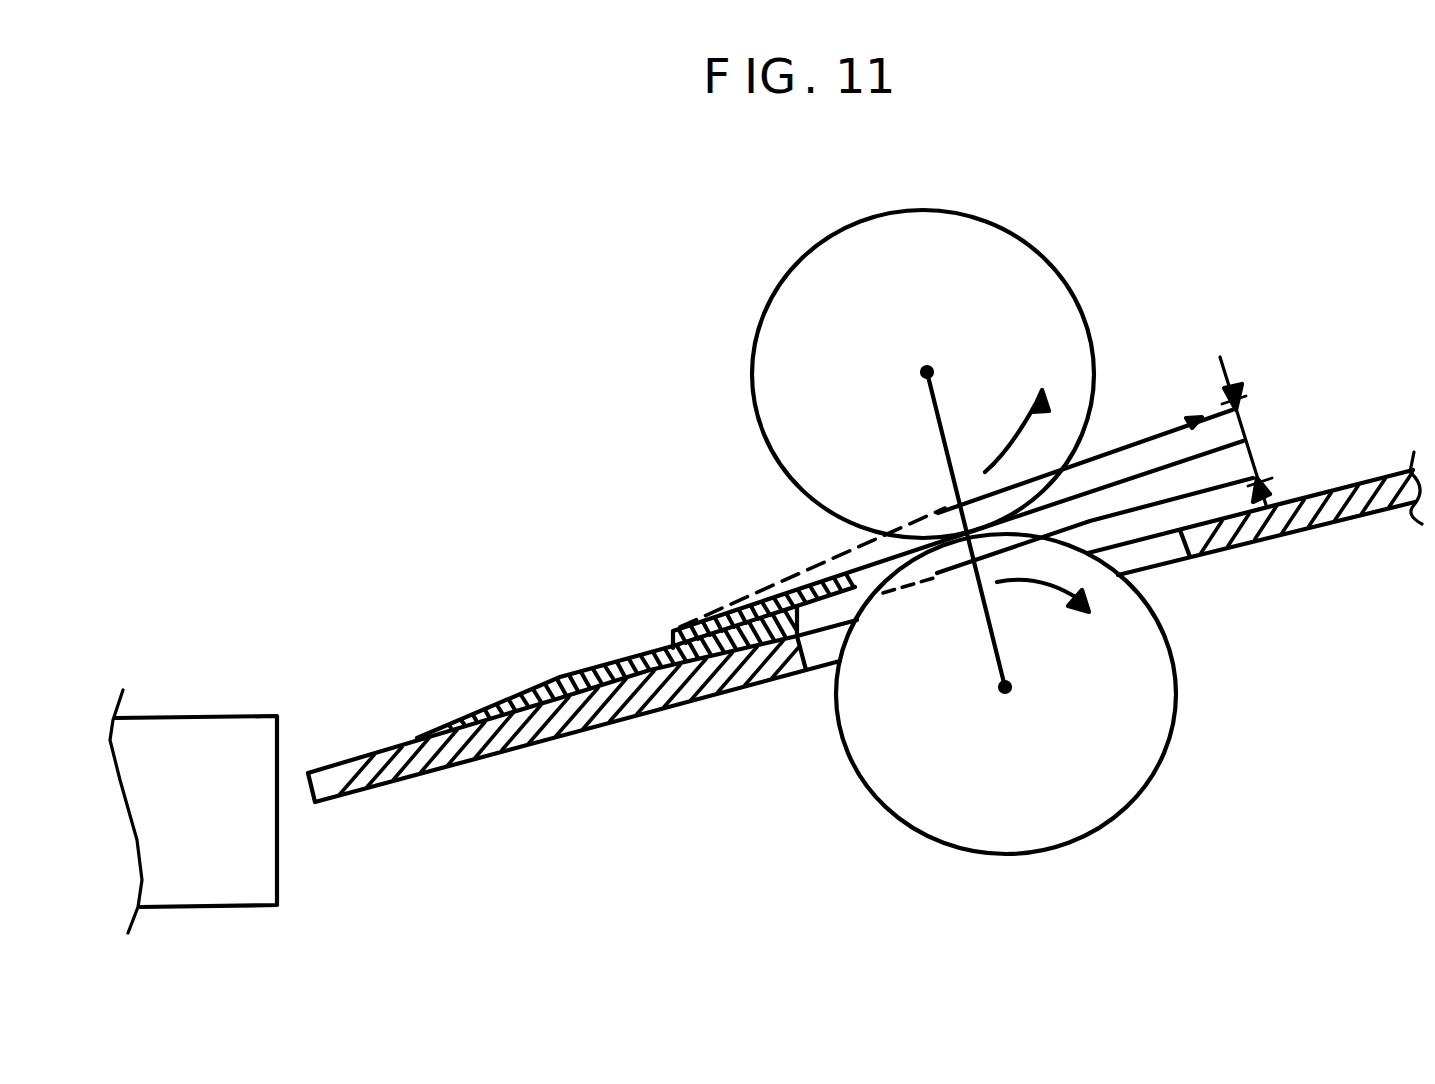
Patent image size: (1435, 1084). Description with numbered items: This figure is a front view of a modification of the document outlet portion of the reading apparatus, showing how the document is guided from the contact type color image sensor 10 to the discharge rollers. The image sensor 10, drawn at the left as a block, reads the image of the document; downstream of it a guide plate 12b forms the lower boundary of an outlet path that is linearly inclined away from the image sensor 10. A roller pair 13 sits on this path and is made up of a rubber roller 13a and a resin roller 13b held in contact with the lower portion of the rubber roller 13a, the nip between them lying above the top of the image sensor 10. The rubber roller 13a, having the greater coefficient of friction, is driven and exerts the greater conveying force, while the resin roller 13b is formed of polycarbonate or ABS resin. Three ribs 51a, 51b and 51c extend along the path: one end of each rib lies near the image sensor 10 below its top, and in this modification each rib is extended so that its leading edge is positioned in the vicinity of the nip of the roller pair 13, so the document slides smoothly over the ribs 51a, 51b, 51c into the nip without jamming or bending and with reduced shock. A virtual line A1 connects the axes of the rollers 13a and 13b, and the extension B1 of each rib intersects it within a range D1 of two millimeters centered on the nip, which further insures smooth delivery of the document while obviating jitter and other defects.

The contact type color image sensor 10 is at (278, 868).
The guide plate 12b is at (692, 705).
The roller pair 13 is at (1013, 498).
The rubber roller 13a is at (1030, 245).
The resin roller 13b is at (1166, 752).
The rib 51a is at (503, 708).
The rib 51b is at (958, 544).
The rib 51c is at (966, 518).
The virtual line connecting roller axes A1 is at (947, 417).
The extension of rib B1 is at (1122, 478).
The range about the nip D1 is at (1274, 431).